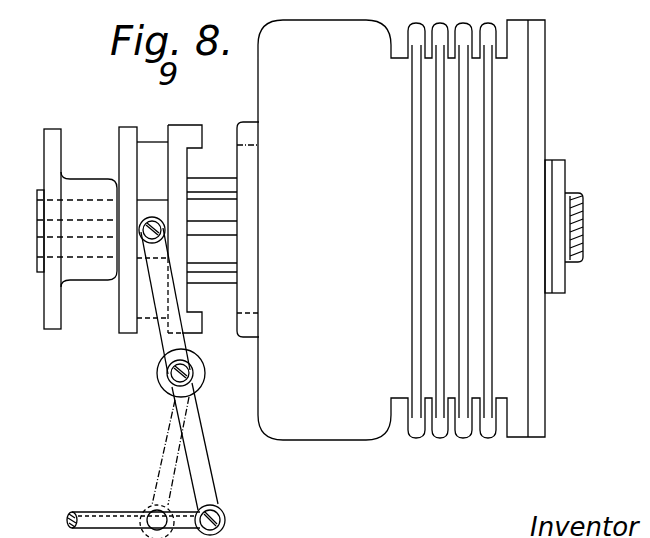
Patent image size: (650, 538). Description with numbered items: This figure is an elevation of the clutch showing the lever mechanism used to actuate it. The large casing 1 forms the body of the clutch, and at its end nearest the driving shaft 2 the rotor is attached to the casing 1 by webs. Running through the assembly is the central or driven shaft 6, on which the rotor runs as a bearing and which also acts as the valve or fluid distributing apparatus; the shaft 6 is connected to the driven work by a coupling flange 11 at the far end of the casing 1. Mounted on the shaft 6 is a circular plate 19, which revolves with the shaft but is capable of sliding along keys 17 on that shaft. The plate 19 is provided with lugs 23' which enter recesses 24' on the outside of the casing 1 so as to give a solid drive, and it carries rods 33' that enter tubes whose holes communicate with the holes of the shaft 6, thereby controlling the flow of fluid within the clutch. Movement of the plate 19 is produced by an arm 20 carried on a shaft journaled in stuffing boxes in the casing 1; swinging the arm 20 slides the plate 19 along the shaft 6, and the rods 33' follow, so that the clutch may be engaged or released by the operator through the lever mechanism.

The casing 1 is at (537, 104).
The driving shaft 2 is at (574, 199).
The central shaft 6 is at (212, 253).
The coupling flange 11 is at (52, 133).
The keys 17 is at (212, 228).
The circular plate 19 is at (173, 132).
The arm 20 is at (183, 405).
The lugs 23' is at (189, 217).
The recesses 24' is at (239, 212).
The rods 33' is at (212, 232).